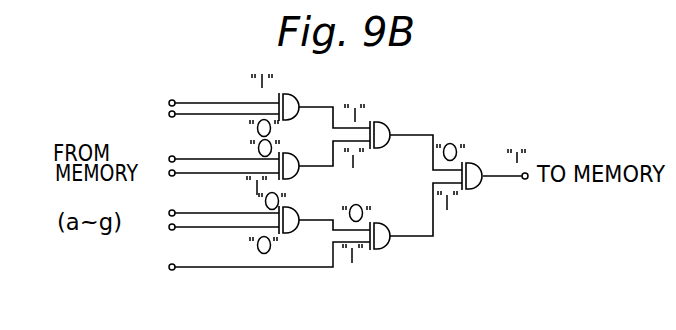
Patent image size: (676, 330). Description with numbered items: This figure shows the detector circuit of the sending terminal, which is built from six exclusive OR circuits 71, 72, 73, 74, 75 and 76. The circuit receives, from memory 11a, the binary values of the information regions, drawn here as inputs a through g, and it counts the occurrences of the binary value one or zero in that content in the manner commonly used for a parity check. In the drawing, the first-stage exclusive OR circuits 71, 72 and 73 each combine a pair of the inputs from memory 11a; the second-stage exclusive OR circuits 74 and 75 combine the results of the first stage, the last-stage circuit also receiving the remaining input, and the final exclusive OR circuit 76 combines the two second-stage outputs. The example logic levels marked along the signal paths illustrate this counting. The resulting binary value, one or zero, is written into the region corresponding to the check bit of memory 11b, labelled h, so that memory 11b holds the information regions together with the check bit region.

The exclusive OR circuit 71 is at (292, 94).
The exclusive OR circuit 72 is at (292, 153).
The exclusive OR circuit 73 is at (296, 207).
The exclusive OR circuit 74 is at (384, 122).
The exclusive OR circuit 75 is at (386, 223).
The exclusive OR circuit 76 is at (476, 163).
The memory (M1) 11a is at (213, 183).
The memory (M2) 11b is at (544, 193).